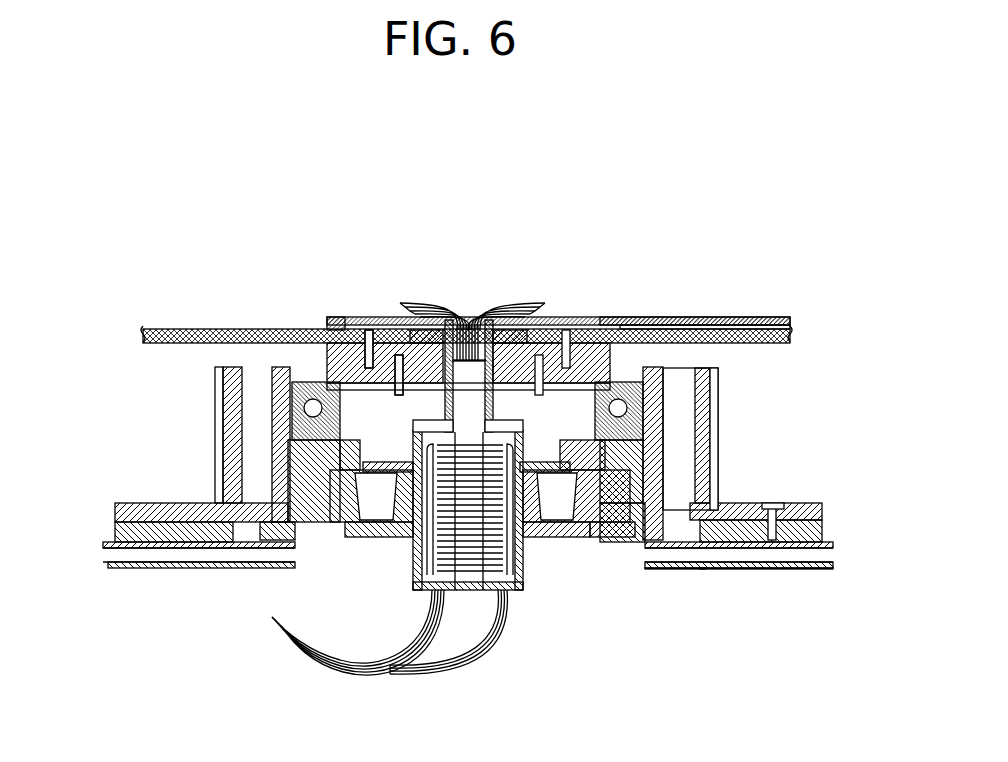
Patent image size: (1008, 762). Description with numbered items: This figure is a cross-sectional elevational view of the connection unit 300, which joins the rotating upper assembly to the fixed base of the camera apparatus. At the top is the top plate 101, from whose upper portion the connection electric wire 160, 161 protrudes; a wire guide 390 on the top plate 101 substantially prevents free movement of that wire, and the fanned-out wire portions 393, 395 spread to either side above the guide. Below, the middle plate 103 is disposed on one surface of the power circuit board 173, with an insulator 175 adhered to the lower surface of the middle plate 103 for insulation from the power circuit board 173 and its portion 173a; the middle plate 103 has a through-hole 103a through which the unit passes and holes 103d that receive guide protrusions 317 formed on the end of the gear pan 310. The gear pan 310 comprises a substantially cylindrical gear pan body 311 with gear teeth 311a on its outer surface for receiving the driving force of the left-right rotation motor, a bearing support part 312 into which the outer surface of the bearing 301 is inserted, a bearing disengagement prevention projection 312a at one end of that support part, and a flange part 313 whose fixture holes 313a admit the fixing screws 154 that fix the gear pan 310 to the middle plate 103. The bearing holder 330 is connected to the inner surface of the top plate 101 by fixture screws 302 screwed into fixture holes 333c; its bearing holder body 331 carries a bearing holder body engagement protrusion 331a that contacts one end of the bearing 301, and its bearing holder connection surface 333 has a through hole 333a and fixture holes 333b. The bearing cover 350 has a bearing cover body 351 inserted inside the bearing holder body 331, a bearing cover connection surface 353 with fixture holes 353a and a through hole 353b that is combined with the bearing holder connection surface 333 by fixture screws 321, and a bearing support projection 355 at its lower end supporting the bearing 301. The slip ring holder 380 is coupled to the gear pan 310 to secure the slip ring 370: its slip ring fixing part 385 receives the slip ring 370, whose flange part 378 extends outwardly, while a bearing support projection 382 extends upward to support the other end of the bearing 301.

The top plate 101 is at (793, 336).
The middle plate 103 is at (125, 530).
The through-hole 103a is at (560, 540).
The holes 103d is at (700, 568).
The fixing screws 154 is at (832, 565).
The connection electric wire 160 is at (390, 668).
The connection electric wire 161 is at (471, 324).
The power circuit board 173 is at (236, 574).
The plate portion 173a is at (643, 572).
The insulator 175 is at (120, 565).
The connection unit 300 is at (328, 312).
The bearing 301 is at (280, 420).
The fixture screws 302 is at (380, 318).
The gear pan 310 is at (724, 372).
The gear pan body 311 is at (703, 420).
The gear teeth 311a is at (715, 395).
The bearing support part 312 is at (670, 490).
The bearing disengagement prevention projection 312a is at (720, 318).
The flange part 313 is at (810, 505).
The fixture holes 313a is at (775, 505).
The guide protrusions 317 is at (745, 548).
The fixture screws 321 is at (432, 330).
The bearing holder 330 is at (330, 365).
The bearing holder body 331 is at (320, 345).
The bearing holder body engagement protrusion 331a is at (296, 326).
The bearing holder connection surface 333 is at (345, 365).
The through hole 333a is at (515, 330).
The fixture holes 333b is at (410, 360).
The fixture holes 333c is at (370, 345).
The bearing cover 350 is at (232, 450).
The bearing cover body 351 is at (310, 430).
The bearing cover connection surface 353 is at (610, 382).
The fixture holes 353a is at (470, 326).
The through hole 353b is at (555, 340).
The bearing support projection 355 is at (690, 525).
The slip ring 370 is at (448, 616).
The flange part 378 is at (555, 545).
The slip ring holder 380 is at (308, 525).
The bearing support projection 382 is at (655, 450).
The slip ring fixing part 385 is at (400, 510).
The wire guide 390 is at (655, 325).
The wire fan 393 is at (497, 312).
The wire fan 395 is at (520, 318).